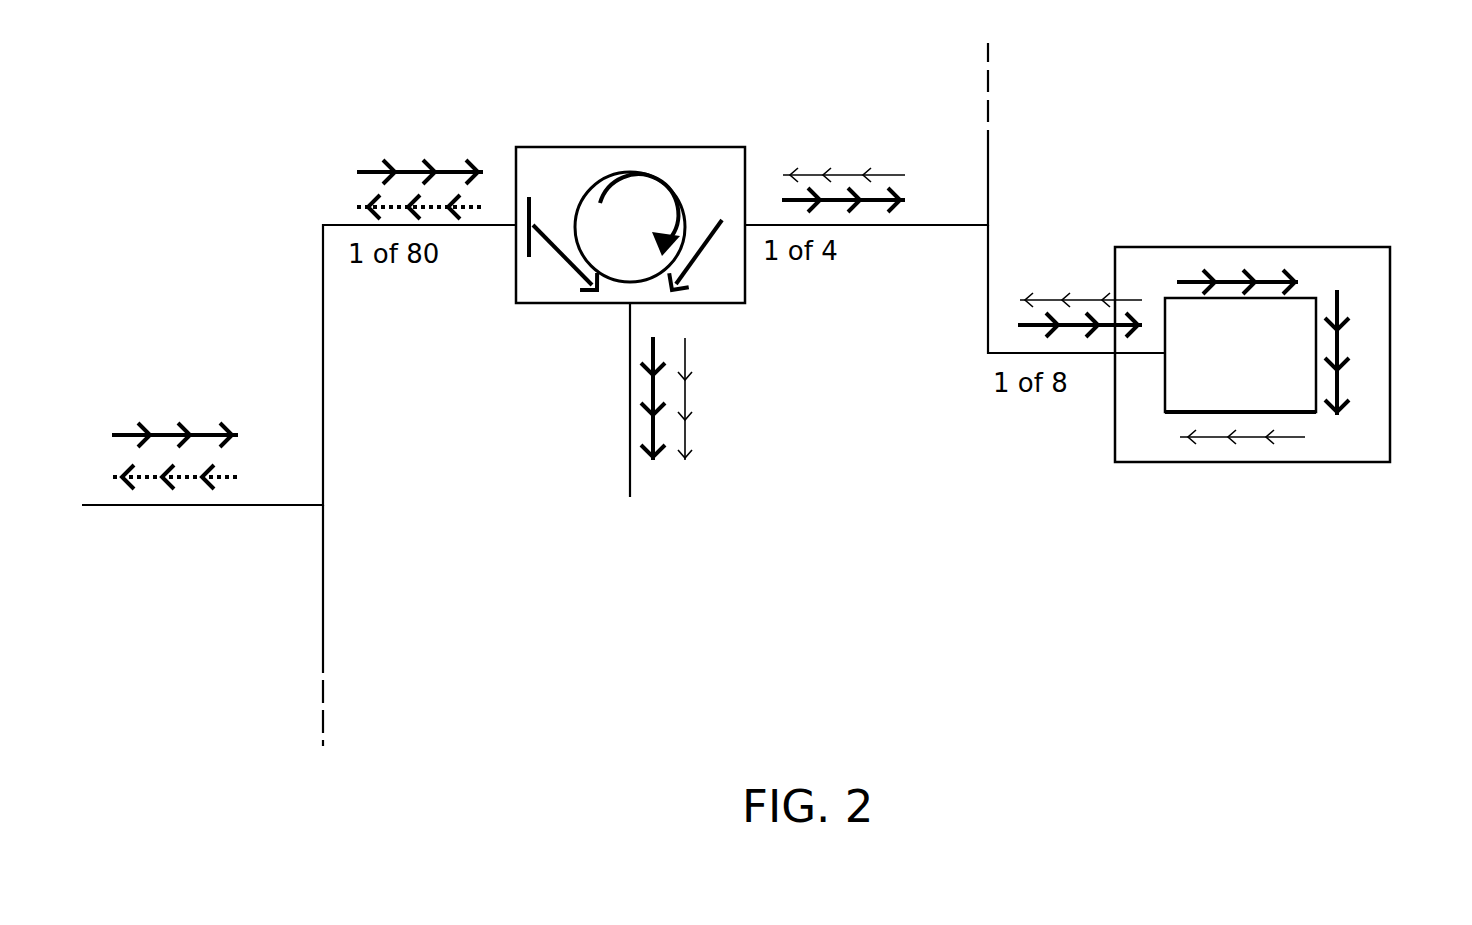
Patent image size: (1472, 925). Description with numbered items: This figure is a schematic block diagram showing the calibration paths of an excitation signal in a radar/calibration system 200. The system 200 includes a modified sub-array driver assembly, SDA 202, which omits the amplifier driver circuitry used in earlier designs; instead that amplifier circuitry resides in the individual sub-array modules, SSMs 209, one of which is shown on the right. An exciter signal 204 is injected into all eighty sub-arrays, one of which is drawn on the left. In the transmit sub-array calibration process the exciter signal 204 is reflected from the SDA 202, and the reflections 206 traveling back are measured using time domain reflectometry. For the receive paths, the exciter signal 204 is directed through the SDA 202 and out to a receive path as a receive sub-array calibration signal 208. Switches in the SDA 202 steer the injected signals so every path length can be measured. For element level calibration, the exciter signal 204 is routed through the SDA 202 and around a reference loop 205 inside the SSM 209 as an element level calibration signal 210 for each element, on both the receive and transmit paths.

The radar/calibration system 200 is at (840, 513).
The modified sub-array driver assembly 202 is at (690, 165).
The exciter signal 204 is at (412, 171).
The reference loop 205 is at (1165, 410).
The reflections 206 is at (237, 477).
The receive sub-array calibration signal 208 is at (653, 428).
The sub-array modules (SSMs) 209 is at (1156, 258).
The element level calibration signal 210 is at (688, 431).